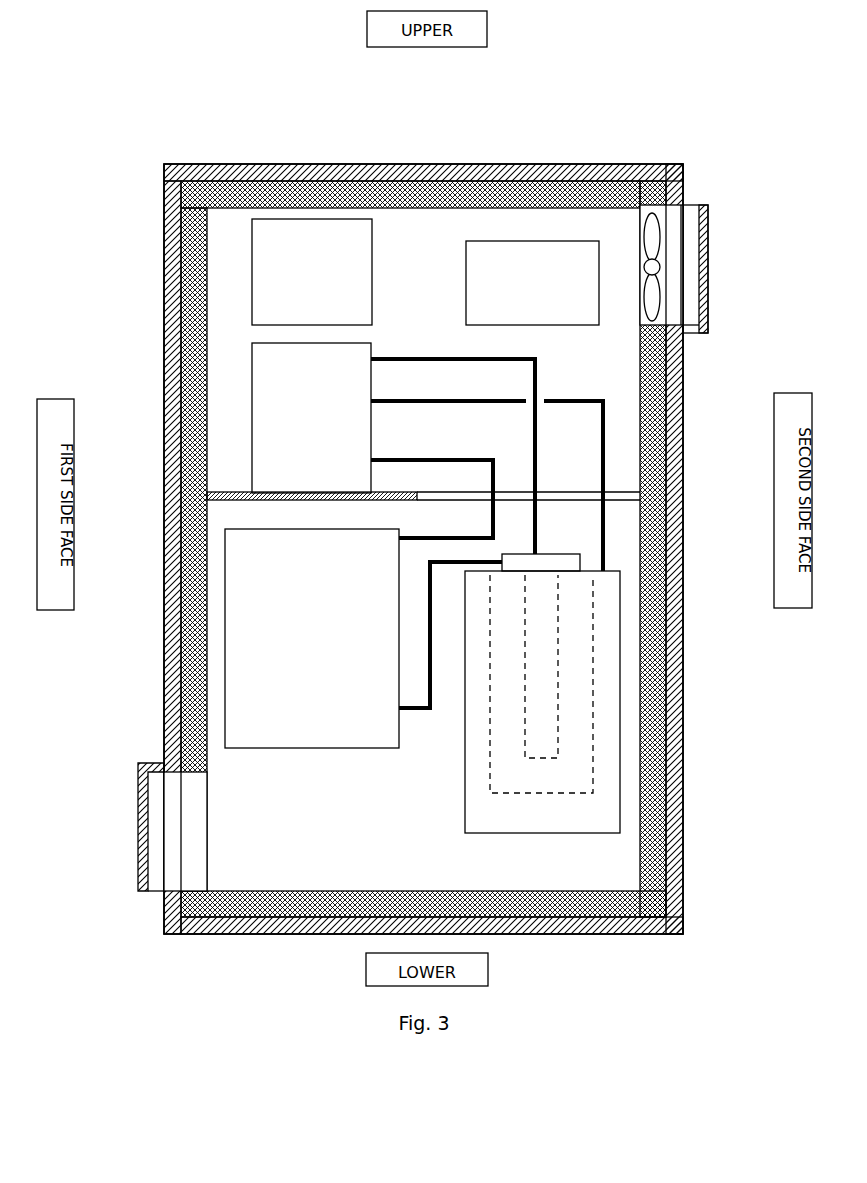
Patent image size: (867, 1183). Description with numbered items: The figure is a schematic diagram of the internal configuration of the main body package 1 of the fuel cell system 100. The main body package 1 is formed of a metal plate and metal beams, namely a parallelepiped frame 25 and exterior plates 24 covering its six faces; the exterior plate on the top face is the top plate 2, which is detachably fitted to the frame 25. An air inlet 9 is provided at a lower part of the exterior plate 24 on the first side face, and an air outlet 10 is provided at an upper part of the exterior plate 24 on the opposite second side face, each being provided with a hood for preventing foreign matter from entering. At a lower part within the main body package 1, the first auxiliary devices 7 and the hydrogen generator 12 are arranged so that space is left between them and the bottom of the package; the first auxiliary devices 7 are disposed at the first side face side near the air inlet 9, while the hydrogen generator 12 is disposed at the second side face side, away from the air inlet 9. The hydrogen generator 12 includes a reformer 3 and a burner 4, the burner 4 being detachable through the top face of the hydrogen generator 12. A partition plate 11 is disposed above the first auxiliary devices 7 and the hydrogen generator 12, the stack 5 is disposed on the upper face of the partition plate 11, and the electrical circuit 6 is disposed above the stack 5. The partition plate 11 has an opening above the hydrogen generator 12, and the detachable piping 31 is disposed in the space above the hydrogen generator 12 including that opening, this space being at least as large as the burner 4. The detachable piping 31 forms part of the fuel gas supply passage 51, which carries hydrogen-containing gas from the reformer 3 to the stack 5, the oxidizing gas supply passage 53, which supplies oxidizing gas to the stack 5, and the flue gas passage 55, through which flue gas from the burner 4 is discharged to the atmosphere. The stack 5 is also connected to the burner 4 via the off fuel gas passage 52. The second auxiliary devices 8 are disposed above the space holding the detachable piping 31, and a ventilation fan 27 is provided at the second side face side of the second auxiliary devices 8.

The fuel cell system 100 is at (408, 88).
The main body package 1 is at (305, 160).
The top plate 2 is at (504, 164).
The second auxiliary devices 8 is at (546, 241).
The air outlet 10 is at (676, 164).
The ventilation fan 27 is at (660, 267).
The electrical circuit 6 is at (252, 246).
The exterior plates 24 is at (165, 293).
The frame 25 is at (200, 416).
The stack 5 is at (252, 382).
The partition plate 11 is at (207, 496).
The flue gas passage 55 is at (430, 579).
The first auxiliary devices 7 is at (225, 633).
The air inlet 9 is at (173, 845).
The off fuel gas passage 52 is at (537, 373).
The detachable piping 31 is at (618, 431).
The fuel gas supply passage 51 is at (605, 460).
The oxidizing gas supply passage 53 is at (493, 518).
The burner 4 is at (558, 628).
The reformer 3 is at (593, 688).
The hydrogen generator 12 is at (620, 725).